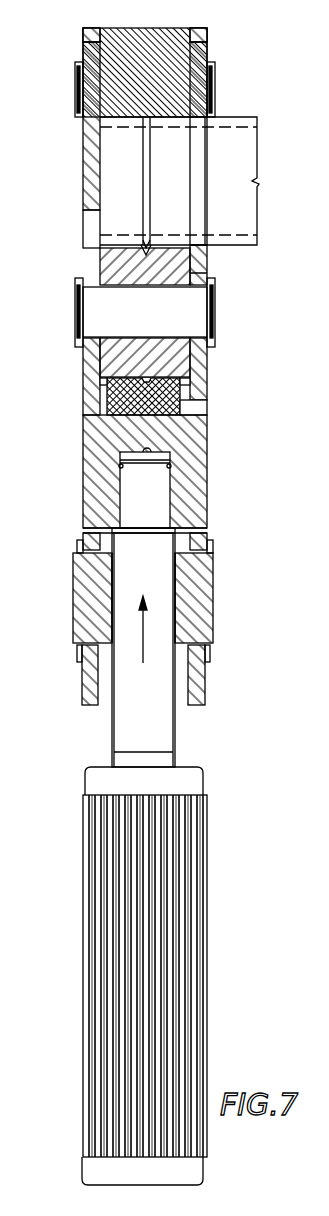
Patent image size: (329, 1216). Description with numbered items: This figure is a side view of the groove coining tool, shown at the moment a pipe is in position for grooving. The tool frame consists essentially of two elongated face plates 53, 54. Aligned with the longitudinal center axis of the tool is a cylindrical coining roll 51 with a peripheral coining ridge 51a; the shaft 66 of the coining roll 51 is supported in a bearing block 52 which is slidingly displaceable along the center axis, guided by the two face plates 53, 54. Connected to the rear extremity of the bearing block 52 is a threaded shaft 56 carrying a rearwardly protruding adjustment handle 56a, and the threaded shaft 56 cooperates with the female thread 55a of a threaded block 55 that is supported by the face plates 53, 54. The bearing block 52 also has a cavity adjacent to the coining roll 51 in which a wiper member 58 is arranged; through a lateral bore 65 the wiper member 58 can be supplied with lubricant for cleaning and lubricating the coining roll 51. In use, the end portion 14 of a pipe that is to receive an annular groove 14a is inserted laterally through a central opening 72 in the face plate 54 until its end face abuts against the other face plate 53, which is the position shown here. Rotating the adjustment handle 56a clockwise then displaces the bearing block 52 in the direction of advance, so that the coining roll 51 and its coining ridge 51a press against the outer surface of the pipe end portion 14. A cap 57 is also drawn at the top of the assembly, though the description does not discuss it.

The end portion 14 is at (228, 128).
The annular groove 14a is at (147, 185).
The coining roll 51 is at (107, 263).
The peripheral coining ridge 51a is at (146, 252).
The bearing block 52 is at (200, 495).
The face plate 53 is at (93, 152).
The face plate 54 is at (198, 685).
The threaded block 55 is at (80, 596).
The female thread 55a is at (110, 622).
The threaded shaft 56 is at (108, 740).
The adjustment handle 56a is at (200, 838).
The cap 57 is at (165, 35).
The wiper member 58 is at (120, 398).
The lateral bore 65 is at (197, 408).
The shaft 66 is at (95, 318).
The central opening 72 is at (200, 254).